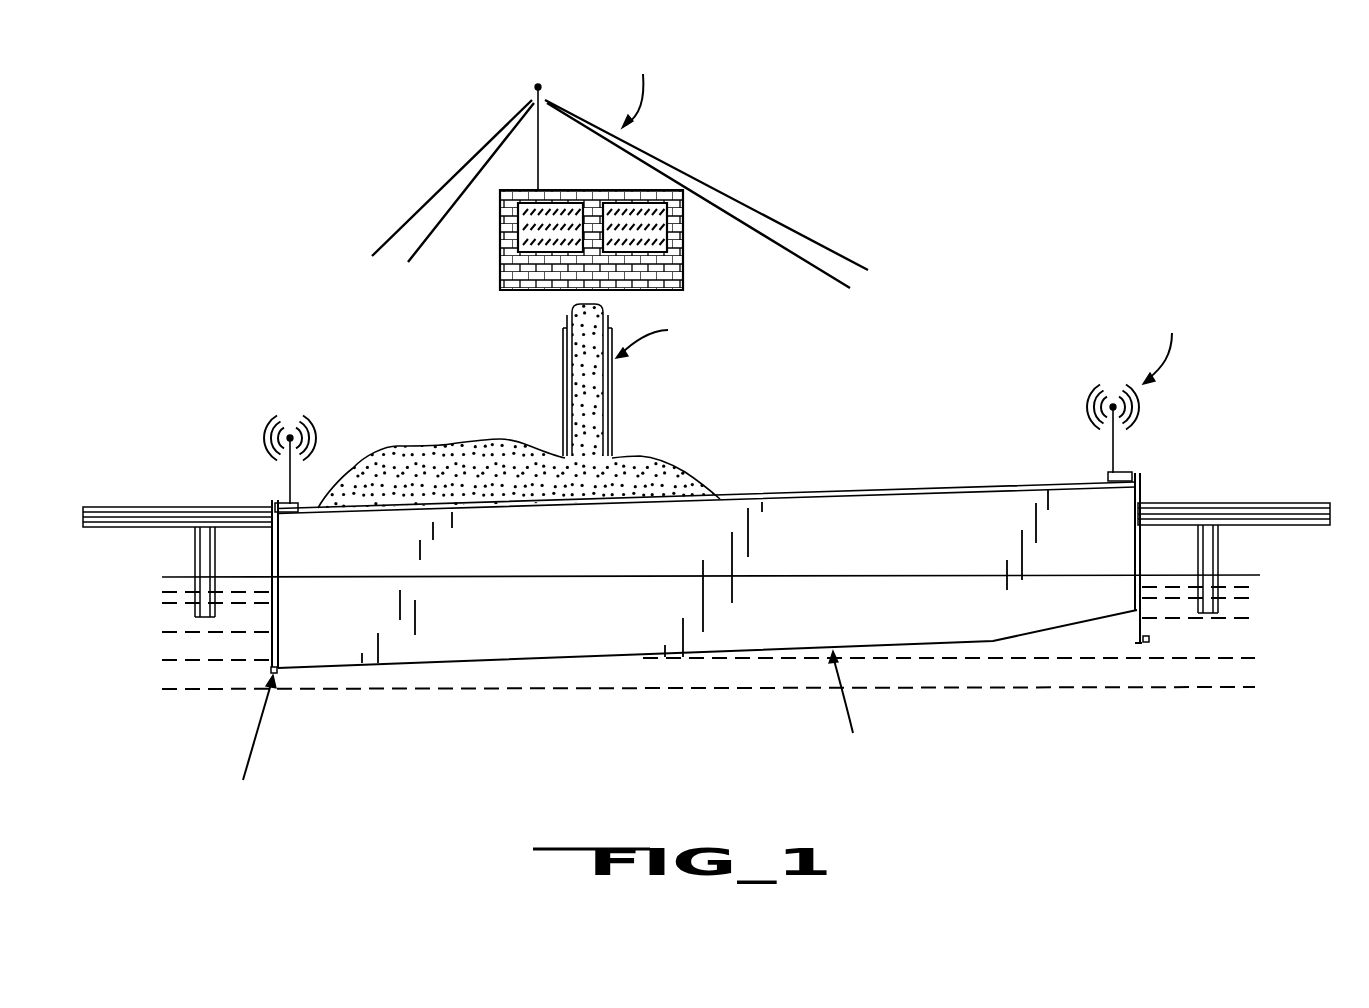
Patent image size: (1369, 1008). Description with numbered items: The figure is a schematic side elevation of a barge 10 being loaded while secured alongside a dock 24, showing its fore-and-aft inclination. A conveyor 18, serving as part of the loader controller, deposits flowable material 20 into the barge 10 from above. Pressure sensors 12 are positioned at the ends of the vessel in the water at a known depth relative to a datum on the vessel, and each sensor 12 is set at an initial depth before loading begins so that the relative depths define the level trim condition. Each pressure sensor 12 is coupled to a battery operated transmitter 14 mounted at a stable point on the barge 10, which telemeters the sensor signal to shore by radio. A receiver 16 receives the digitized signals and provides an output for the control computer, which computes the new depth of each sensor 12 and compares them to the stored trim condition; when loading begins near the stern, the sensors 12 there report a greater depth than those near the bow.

The barge 10 is at (723, 642).
The pressure sensor 12 is at (272, 673).
The transmitter 14 is at (280, 502).
The receiver 16 is at (627, 192).
The conveyor 18 is at (612, 390).
The flowable material 20 is at (660, 462).
The dock 24 is at (1300, 502).